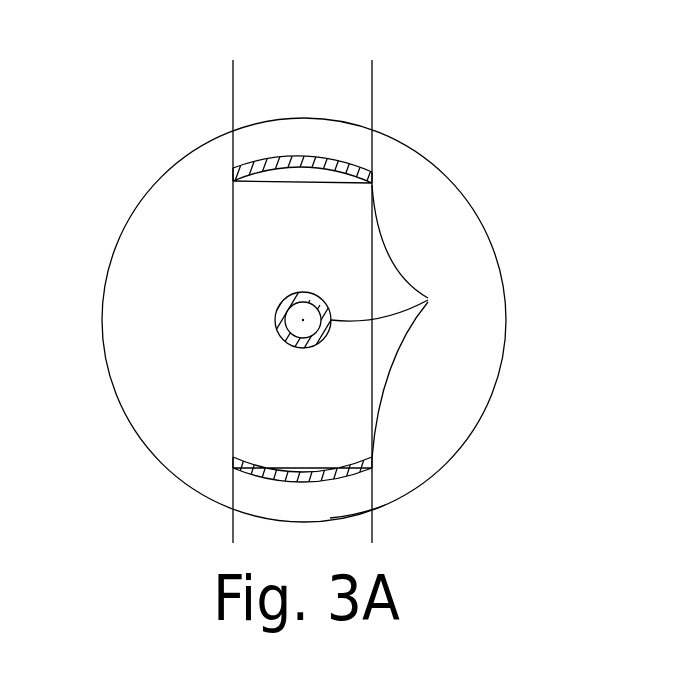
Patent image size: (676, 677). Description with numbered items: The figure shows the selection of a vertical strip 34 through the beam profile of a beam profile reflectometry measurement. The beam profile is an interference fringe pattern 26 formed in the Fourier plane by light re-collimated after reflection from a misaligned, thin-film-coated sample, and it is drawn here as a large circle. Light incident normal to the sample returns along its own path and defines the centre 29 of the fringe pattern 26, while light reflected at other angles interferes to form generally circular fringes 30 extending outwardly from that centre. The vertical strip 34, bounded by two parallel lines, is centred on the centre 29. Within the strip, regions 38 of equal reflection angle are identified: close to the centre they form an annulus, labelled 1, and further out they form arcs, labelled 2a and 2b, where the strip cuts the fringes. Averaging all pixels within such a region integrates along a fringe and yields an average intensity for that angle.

The vertical strip 34 is at (299, 78).
The interference fringe pattern 26 is at (112, 250).
The arc region 2a is at (305, 173).
The arc region 2b is at (305, 477).
The centre of the fringe pattern 29 is at (295, 320).
The annulus region 1 is at (305, 288).
The regions of equal angle 38 is at (402, 321).
The circular fringes 30 is at (358, 493).